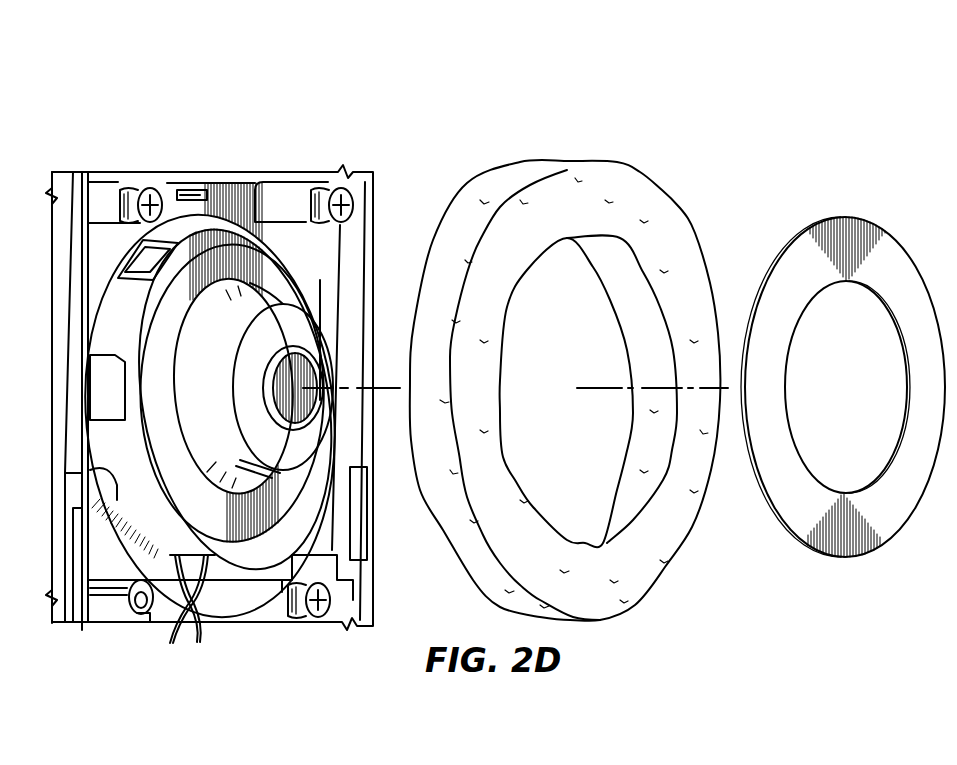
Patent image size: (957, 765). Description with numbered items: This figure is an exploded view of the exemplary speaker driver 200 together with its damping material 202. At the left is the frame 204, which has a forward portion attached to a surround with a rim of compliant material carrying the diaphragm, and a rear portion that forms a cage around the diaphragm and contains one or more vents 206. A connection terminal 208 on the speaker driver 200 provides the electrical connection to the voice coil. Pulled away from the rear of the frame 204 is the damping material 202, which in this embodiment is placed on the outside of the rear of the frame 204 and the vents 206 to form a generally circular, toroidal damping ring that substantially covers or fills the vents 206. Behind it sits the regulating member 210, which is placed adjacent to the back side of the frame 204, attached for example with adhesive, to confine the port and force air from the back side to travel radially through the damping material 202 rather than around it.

The speaker driver 200 is at (745, 138).
The damping material 202 is at (486, 176).
The frame 204 is at (285, 288).
The vents 206 is at (118, 355).
The connection terminal 208 is at (162, 540).
The regulating member 210 is at (790, 535).